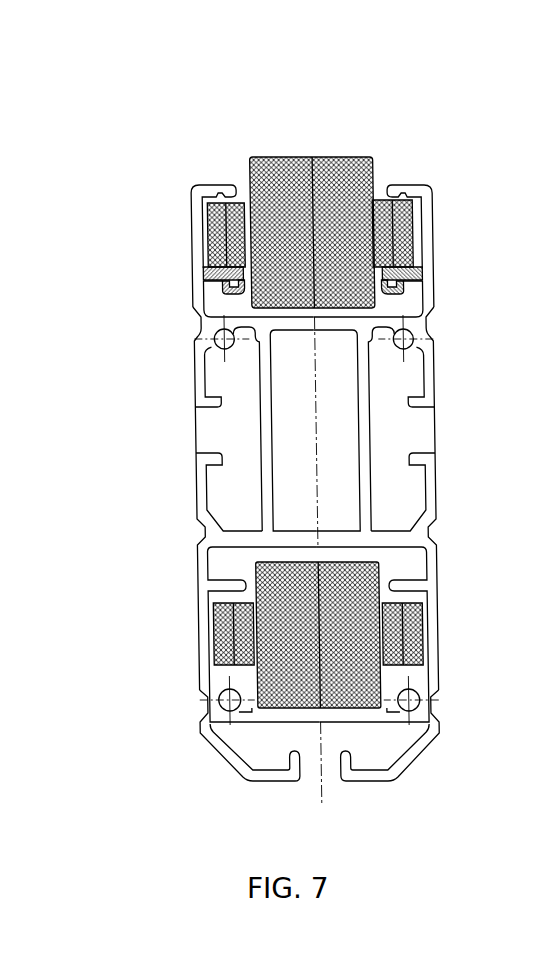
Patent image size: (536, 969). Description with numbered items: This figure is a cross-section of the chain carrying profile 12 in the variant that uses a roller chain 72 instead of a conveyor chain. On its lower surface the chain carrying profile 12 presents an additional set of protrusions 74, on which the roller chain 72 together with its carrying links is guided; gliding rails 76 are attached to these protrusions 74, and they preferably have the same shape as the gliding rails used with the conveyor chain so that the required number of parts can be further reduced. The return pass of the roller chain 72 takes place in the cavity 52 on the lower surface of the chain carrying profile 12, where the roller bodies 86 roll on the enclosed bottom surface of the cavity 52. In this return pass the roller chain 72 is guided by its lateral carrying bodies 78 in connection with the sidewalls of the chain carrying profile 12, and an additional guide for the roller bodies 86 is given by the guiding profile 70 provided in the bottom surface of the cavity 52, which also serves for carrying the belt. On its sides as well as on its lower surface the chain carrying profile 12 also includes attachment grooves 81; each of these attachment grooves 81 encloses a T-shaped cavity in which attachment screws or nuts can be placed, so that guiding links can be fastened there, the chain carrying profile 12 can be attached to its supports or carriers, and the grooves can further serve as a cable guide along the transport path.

The chain carrying profile 12 is at (442, 555).
The cavity 52 is at (402, 679).
The guiding profile 70 is at (212, 728).
The roller chain 72 is at (268, 149).
The protrusions 74 is at (210, 279).
The gliding rails 76 is at (222, 288).
The lateral carrying bodies 78 is at (189, 205).
The attachment grooves 81 is at (216, 430).
The roller bodies 86 is at (303, 158).